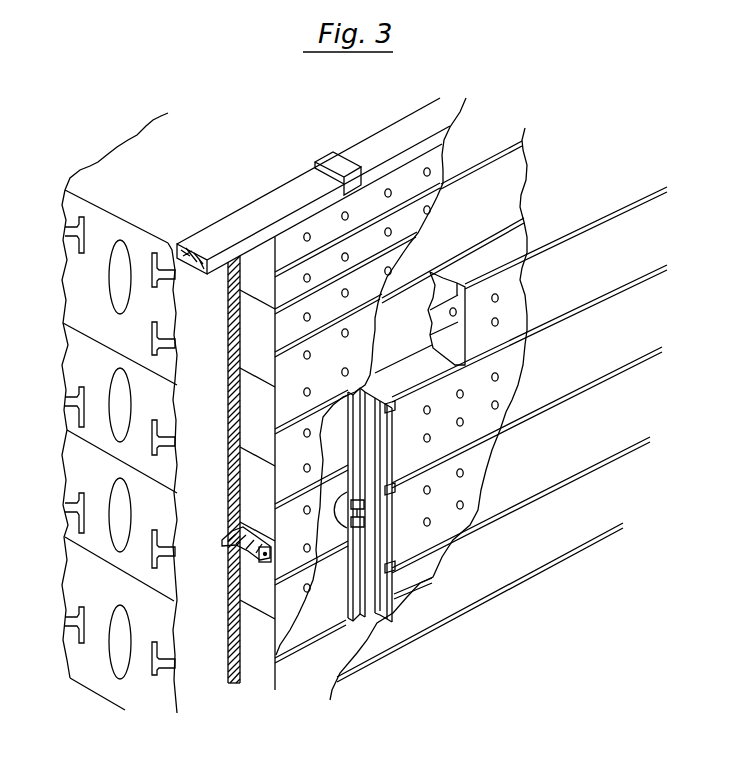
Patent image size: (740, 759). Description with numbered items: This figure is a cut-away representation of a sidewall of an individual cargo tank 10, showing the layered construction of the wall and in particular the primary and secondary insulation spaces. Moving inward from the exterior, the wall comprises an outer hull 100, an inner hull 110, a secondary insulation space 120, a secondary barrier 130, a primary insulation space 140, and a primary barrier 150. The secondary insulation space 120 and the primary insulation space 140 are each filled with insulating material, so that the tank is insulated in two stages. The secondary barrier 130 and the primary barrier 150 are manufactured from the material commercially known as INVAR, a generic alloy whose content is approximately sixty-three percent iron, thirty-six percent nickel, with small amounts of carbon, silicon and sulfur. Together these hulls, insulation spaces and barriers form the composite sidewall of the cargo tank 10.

The cargo tank 10 is at (364, 404).
The outer hull 100 is at (137, 146).
The inner hull 110 is at (245, 160).
The secondary insulation space 120 is at (302, 178).
The secondary barrier 130 is at (488, 213).
The primary insulation space 140 is at (511, 246).
The primary barrier 150 is at (603, 280).